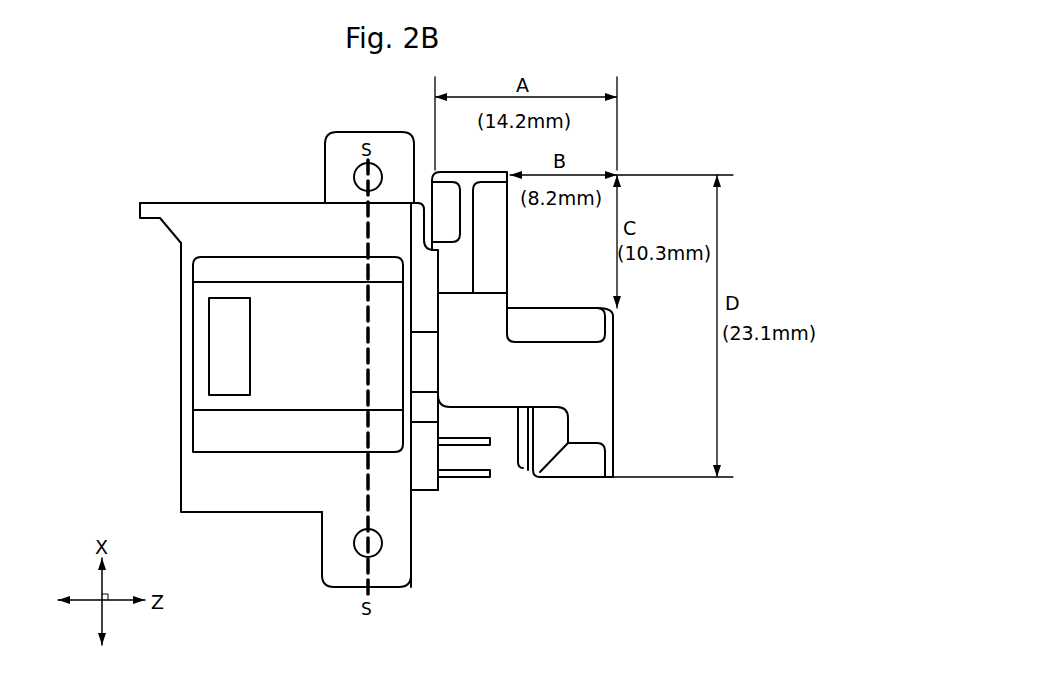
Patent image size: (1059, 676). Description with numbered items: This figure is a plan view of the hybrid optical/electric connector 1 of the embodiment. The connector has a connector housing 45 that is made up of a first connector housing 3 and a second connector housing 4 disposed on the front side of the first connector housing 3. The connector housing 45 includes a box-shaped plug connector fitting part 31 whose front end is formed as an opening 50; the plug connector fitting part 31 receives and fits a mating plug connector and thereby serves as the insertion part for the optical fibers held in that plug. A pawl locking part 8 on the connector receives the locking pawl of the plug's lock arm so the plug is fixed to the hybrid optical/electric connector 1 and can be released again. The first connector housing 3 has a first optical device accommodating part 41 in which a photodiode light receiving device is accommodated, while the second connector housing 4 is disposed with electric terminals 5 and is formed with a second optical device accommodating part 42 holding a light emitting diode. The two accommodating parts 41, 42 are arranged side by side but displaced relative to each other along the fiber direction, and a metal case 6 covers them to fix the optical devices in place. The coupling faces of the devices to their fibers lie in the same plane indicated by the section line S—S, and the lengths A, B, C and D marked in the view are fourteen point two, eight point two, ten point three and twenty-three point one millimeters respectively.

The hybrid optical/electric connector 1 is at (544, 362).
The first connector housing 3 is at (587, 432).
The second connector housing 4 is at (262, 490).
The electric terminals 5 is at (463, 478).
The metal case 6 is at (603, 393).
The pawl locking part 8 is at (209, 389).
The plug connector fitting part 31 is at (218, 490).
The first optical device accommodating part 41 is at (603, 358).
The second optical device accommodating part 42 is at (488, 254).
The connector housing 45 is at (423, 540).
The opening 50 is at (180, 372).